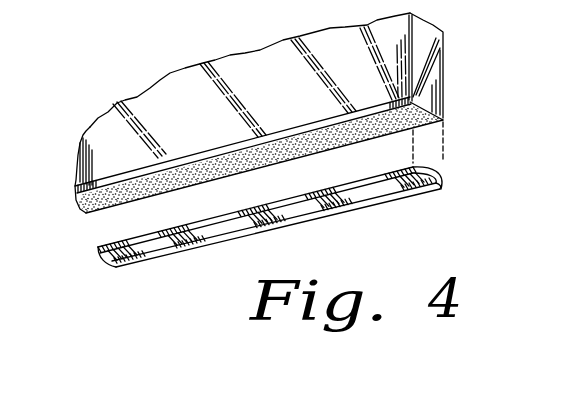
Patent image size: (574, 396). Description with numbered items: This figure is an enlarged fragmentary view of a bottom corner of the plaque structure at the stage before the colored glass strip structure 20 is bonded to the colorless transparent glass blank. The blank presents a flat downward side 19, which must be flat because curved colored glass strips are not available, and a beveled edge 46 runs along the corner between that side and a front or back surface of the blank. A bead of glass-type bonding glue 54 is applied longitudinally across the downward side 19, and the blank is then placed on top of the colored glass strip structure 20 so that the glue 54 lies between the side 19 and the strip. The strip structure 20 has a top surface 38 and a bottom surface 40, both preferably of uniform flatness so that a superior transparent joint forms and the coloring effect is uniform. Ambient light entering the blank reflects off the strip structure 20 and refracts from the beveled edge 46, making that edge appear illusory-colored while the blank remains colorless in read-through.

The side 19 is at (443, 118).
The colored glass strip structure 20 is at (445, 181).
The top surface 38 is at (422, 173).
The bottom surface 40 is at (380, 192).
The beveled edge 46 is at (118, 177).
The glass-type bonding glue 54 is at (143, 190).